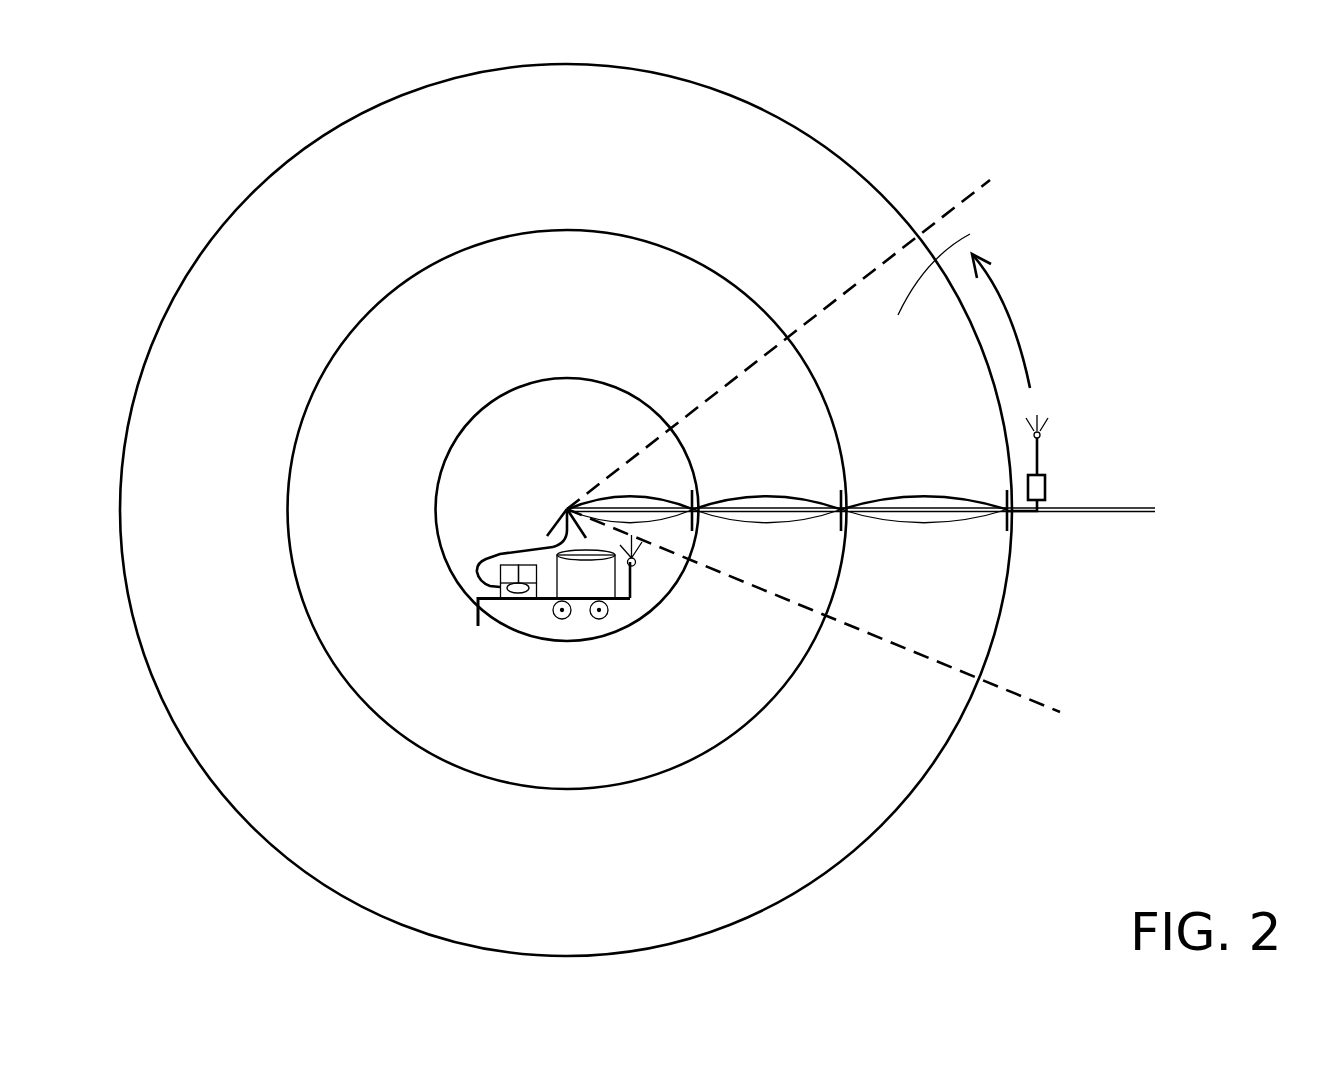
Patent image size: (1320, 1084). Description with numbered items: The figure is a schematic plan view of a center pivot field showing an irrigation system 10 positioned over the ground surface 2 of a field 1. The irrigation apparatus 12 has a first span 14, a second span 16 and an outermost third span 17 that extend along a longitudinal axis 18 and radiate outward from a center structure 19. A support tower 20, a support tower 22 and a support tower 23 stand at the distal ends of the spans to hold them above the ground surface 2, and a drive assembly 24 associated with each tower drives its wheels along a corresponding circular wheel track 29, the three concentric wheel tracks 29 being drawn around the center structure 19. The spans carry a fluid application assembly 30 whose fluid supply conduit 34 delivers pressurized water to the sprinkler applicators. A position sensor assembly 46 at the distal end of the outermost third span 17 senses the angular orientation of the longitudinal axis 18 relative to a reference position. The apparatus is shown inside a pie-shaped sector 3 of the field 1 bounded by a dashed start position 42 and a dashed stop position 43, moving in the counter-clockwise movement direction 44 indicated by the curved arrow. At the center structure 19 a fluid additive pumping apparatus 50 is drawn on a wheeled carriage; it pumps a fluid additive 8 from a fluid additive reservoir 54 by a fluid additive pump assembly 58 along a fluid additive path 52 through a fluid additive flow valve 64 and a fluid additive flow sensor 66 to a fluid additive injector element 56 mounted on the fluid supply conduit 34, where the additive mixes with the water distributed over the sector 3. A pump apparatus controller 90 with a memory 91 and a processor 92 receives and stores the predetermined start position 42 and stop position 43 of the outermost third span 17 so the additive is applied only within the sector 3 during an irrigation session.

The field 1 is at (906, 888).
The ground surface 2 is at (328, 198).
The sector 3 is at (943, 262).
The fluid additive 8 is at (605, 582).
The irrigation system 10 is at (868, 516).
The irrigation apparatus 12 is at (612, 495).
The first span 14 is at (663, 496).
The second span 16 is at (792, 496).
The outermost third span 17 is at (948, 496).
The longitudinal axis 18 is at (1086, 513).
The center structure 19 is at (565, 507).
The support tower 20 is at (692, 530).
The support tower 22 is at (837, 521).
The support tower 23 is at (1006, 520).
The drive assembly 24 is at (831, 550).
The wheel track 29 is at (665, 70).
The fluid application assembly 30 is at (748, 495).
The fluid supply conduit 34 is at (730, 499).
The start position 42 is at (1006, 700).
The stop position 43 is at (950, 209).
The movement direction 44 is at (1011, 326).
The position sensor assembly 46 is at (1046, 487).
The fluid additive pumping apparatus 50 is at (580, 621).
The fluid additive path 52 is at (550, 604).
The fluid additive reservoir 54 is at (578, 600).
The fluid additive injector element 56 is at (568, 506).
The fluid additive pump assembly 58 is at (507, 602).
The fluid additive flow valve 64 is at (478, 577).
The fluid additive flow sensor 66 is at (477, 567).
The pump apparatus controller 90 is at (482, 591).
The memory 91 is at (510, 567).
The processor 92 is at (527, 567).